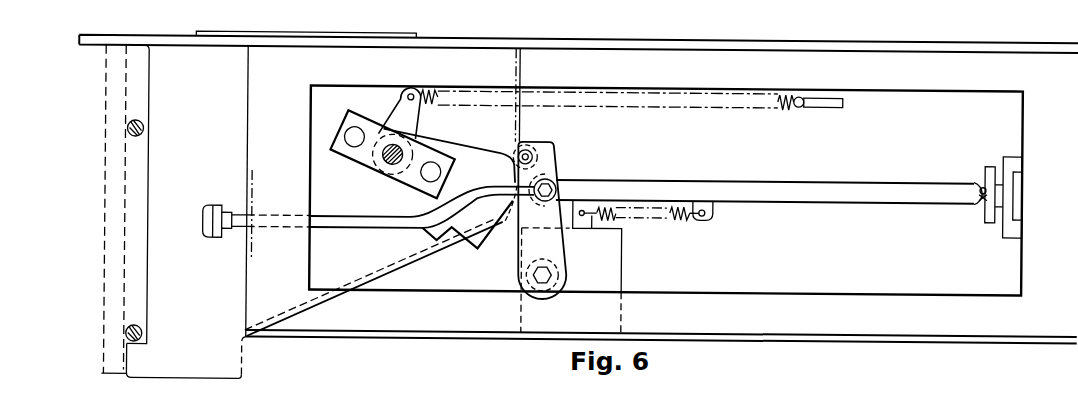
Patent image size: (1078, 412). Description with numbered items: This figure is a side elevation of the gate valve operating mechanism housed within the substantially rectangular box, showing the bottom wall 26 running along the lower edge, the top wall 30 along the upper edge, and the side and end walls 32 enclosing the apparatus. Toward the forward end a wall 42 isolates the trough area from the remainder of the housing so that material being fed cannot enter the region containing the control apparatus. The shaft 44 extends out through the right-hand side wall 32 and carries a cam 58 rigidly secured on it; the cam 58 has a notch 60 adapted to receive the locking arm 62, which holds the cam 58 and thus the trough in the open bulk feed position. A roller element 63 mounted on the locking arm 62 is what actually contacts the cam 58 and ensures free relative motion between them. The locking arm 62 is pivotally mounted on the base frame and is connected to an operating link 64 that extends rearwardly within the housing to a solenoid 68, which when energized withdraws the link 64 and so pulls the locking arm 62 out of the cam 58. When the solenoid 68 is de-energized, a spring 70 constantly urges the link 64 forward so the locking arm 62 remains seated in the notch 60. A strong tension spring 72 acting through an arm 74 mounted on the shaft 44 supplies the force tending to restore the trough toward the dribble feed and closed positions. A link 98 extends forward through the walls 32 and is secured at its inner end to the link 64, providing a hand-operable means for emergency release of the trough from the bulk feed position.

The bottom wall 26 is at (903, 339).
The top wall 30 is at (964, 43).
The side and end walls 32 is at (247, 265).
The wall 42 is at (102, 252).
The shaft 44 is at (377, 166).
The cam 58 is at (476, 151).
The notch 60 is at (455, 241).
The locking arm 62 is at (560, 160).
The roller element 63 is at (540, 138).
The operating link 64 is at (828, 180).
The solenoid 68 is at (1005, 222).
The spring 70 is at (645, 219).
The tension springs 72 is at (662, 106).
The arm 74 is at (398, 112).
The link 98 is at (211, 203).